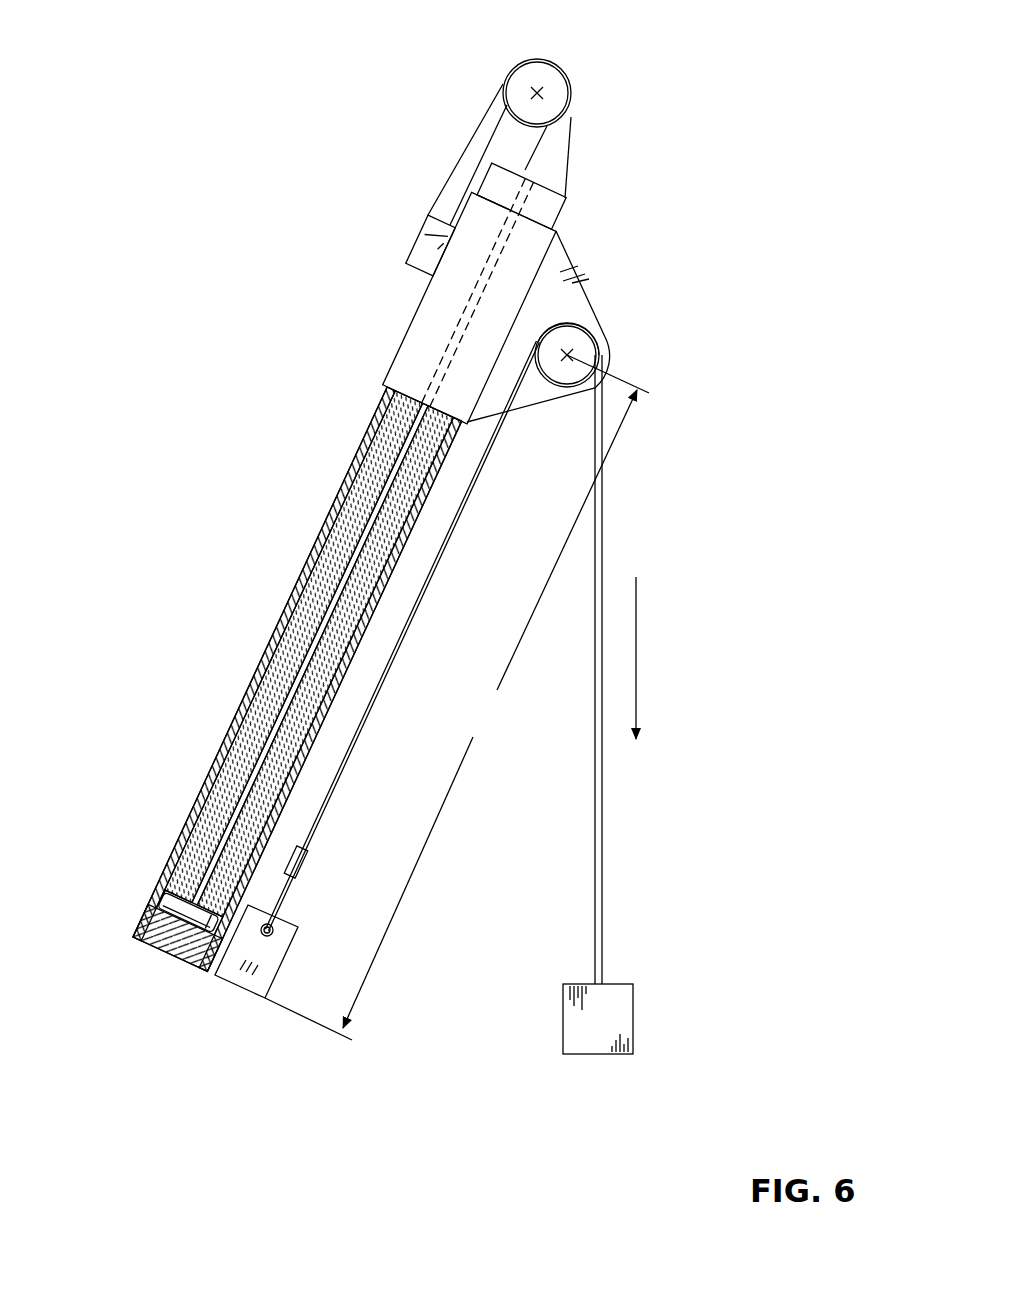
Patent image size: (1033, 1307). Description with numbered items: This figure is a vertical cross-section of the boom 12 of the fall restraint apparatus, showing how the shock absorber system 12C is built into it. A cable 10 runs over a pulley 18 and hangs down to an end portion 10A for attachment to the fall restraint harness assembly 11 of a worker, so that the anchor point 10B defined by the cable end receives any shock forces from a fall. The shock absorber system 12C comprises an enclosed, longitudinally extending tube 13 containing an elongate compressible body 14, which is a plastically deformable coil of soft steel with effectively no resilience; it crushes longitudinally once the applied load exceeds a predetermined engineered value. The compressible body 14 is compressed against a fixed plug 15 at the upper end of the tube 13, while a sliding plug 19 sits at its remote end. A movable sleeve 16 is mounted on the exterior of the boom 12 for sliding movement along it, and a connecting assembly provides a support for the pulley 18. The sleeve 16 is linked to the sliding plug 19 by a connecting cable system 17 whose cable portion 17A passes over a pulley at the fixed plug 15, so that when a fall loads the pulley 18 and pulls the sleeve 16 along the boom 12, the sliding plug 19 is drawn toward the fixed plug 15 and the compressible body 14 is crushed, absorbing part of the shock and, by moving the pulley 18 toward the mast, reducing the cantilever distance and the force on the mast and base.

The cable 10 is at (604, 871).
The end portion 10A is at (264, 955).
The anchor point 10B is at (234, 980).
The fall restraint harness assembly 11 is at (635, 1037).
The boom 12 is at (446, 753).
The shock absorber system 12C is at (441, 894).
The tube 13 is at (378, 605).
The compressible body 14 is at (297, 679).
The fixed plug 15 is at (521, 196).
The sleeve 16 is at (462, 286).
The connecting cable system 17 is at (309, 654).
The cable portion 17A is at (522, 87).
The pulley 18 is at (581, 342).
The sliding plug 19 is at (189, 912).